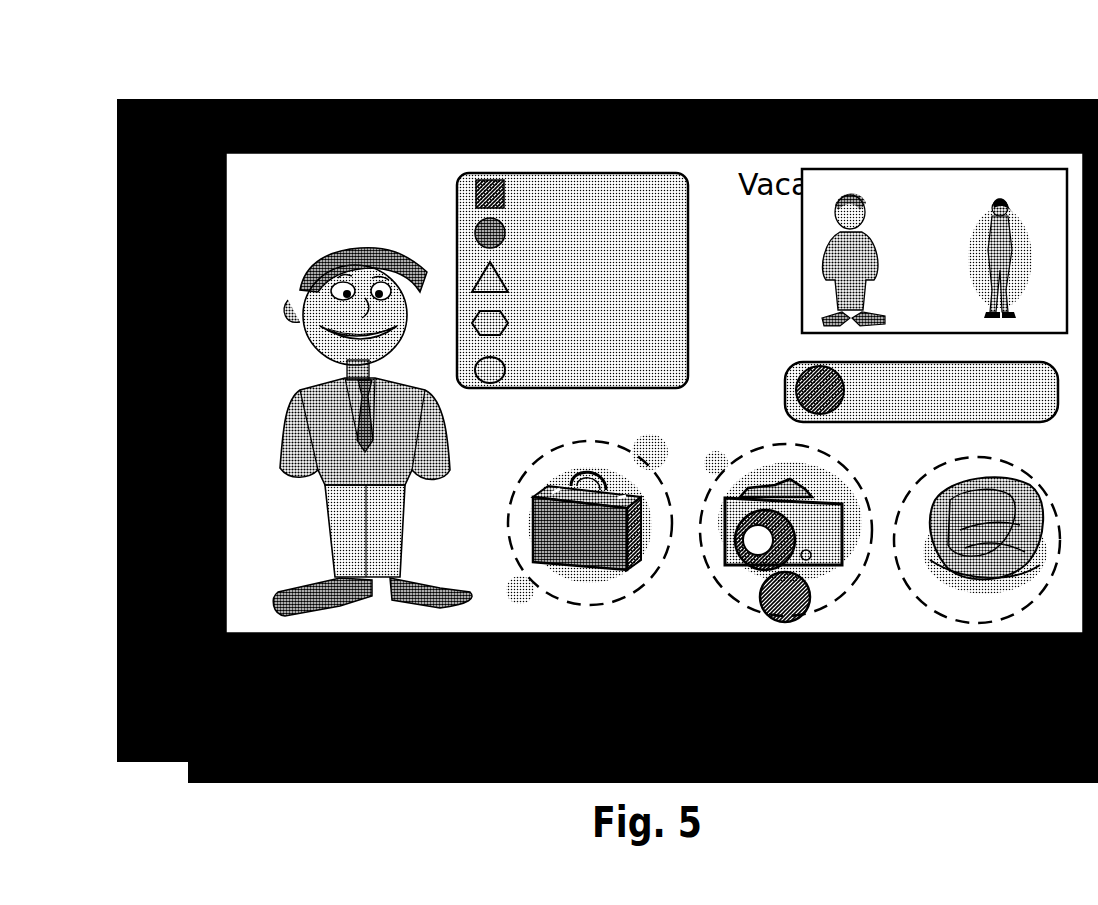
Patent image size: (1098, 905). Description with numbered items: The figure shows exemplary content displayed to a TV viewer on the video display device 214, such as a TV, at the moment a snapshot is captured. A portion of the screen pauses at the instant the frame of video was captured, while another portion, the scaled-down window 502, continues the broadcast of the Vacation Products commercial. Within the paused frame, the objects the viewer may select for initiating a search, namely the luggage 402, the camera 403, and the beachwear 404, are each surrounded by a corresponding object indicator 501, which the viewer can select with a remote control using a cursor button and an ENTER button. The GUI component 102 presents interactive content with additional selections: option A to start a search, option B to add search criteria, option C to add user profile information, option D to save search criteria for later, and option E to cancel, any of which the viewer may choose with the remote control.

The video display device 214 is at (160, 99).
The GUI component 102 is at (457, 203).
The object indicator 501 is at (528, 470).
The scaled-down window 502 is at (802, 224).
The luggage 402 is at (533, 528).
The camera 403 is at (728, 557).
The beachwear 404 is at (925, 560).